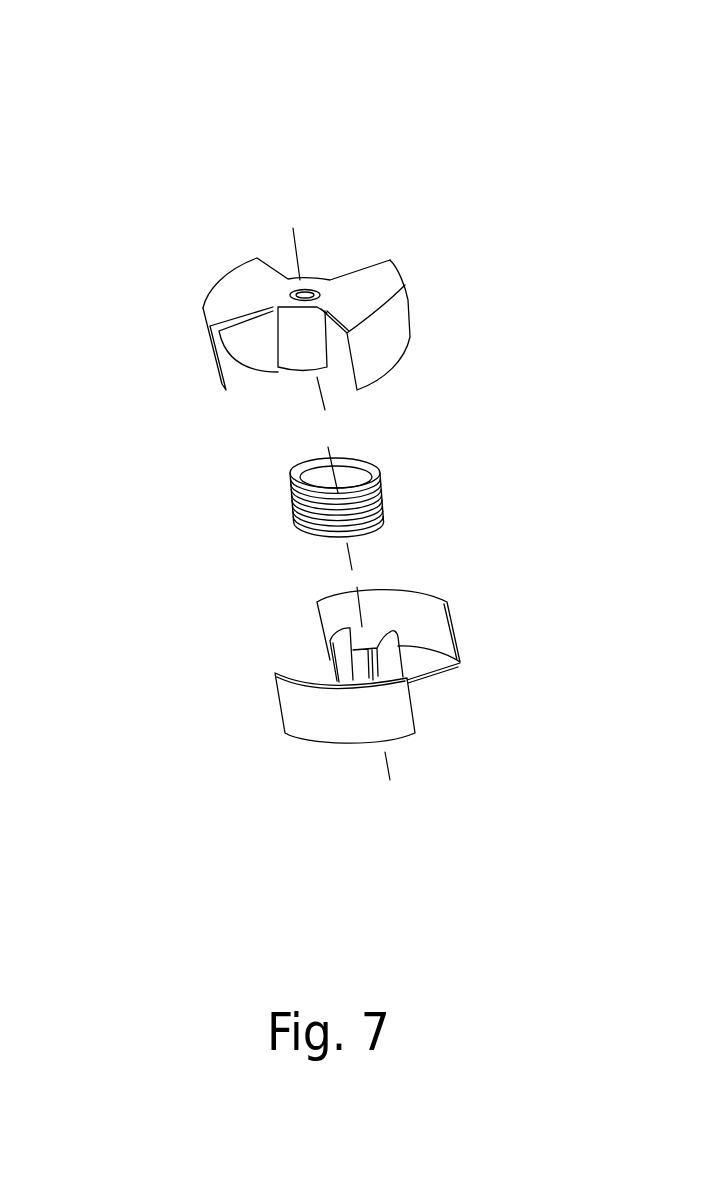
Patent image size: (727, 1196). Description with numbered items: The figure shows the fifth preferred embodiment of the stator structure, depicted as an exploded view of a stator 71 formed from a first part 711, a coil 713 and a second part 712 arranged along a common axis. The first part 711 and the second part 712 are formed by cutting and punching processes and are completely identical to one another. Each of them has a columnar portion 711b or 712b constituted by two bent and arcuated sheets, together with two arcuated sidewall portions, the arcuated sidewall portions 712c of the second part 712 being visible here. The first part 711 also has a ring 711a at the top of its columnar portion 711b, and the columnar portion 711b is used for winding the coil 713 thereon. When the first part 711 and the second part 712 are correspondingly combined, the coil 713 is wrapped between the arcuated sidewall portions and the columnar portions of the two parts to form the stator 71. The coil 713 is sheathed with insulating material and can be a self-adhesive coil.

The stator 71 is at (147, 107).
The first part 711 is at (402, 397).
The ring 711a is at (296, 278).
The columnar portion 711b is at (307, 358).
The second part 712 is at (442, 702).
The columnar portion 712b is at (347, 643).
The arcuated sidewall portion 712c is at (313, 722).
The coil 713 is at (297, 525).